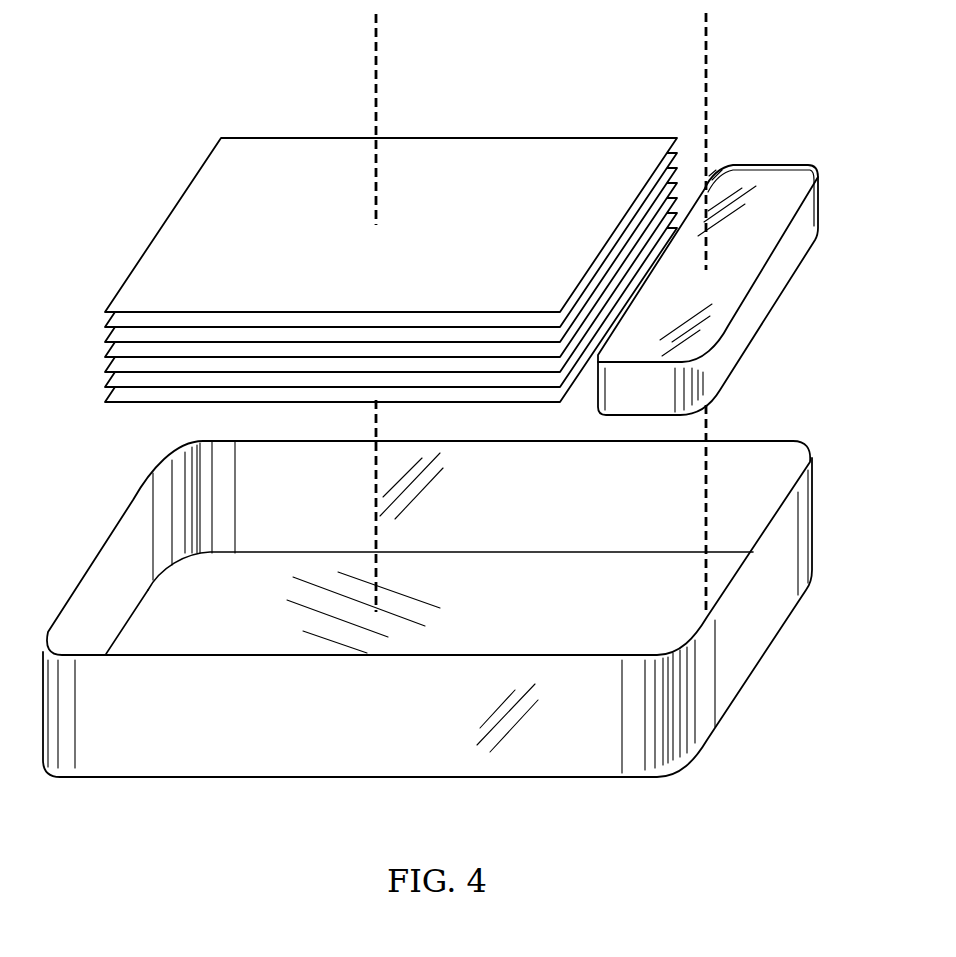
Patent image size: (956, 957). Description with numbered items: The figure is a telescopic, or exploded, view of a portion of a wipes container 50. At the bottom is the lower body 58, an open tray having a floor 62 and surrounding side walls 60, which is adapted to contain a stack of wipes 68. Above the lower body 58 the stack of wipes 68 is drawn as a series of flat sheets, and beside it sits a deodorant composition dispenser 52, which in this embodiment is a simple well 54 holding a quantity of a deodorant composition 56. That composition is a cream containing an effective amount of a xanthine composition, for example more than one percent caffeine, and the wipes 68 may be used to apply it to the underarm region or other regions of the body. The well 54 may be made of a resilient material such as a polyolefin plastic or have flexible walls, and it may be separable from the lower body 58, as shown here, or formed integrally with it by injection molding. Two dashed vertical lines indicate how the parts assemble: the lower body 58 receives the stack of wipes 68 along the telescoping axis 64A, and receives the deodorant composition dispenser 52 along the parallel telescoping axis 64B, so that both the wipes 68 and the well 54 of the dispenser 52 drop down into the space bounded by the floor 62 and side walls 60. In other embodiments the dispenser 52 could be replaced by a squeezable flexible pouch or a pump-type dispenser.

The wipes container 50 is at (150, 65).
The deodorant composition dispenser 52 is at (794, 270).
The well 54 is at (756, 162).
The deodorant composition 56 is at (790, 180).
The lower body 58 is at (128, 530).
The side walls 60 is at (562, 505).
The floor 62 is at (569, 600).
The telescoping axis 64A is at (378, 86).
The parallel telescoping axis 64B is at (703, 94).
The stack of wipes 68 is at (173, 242).